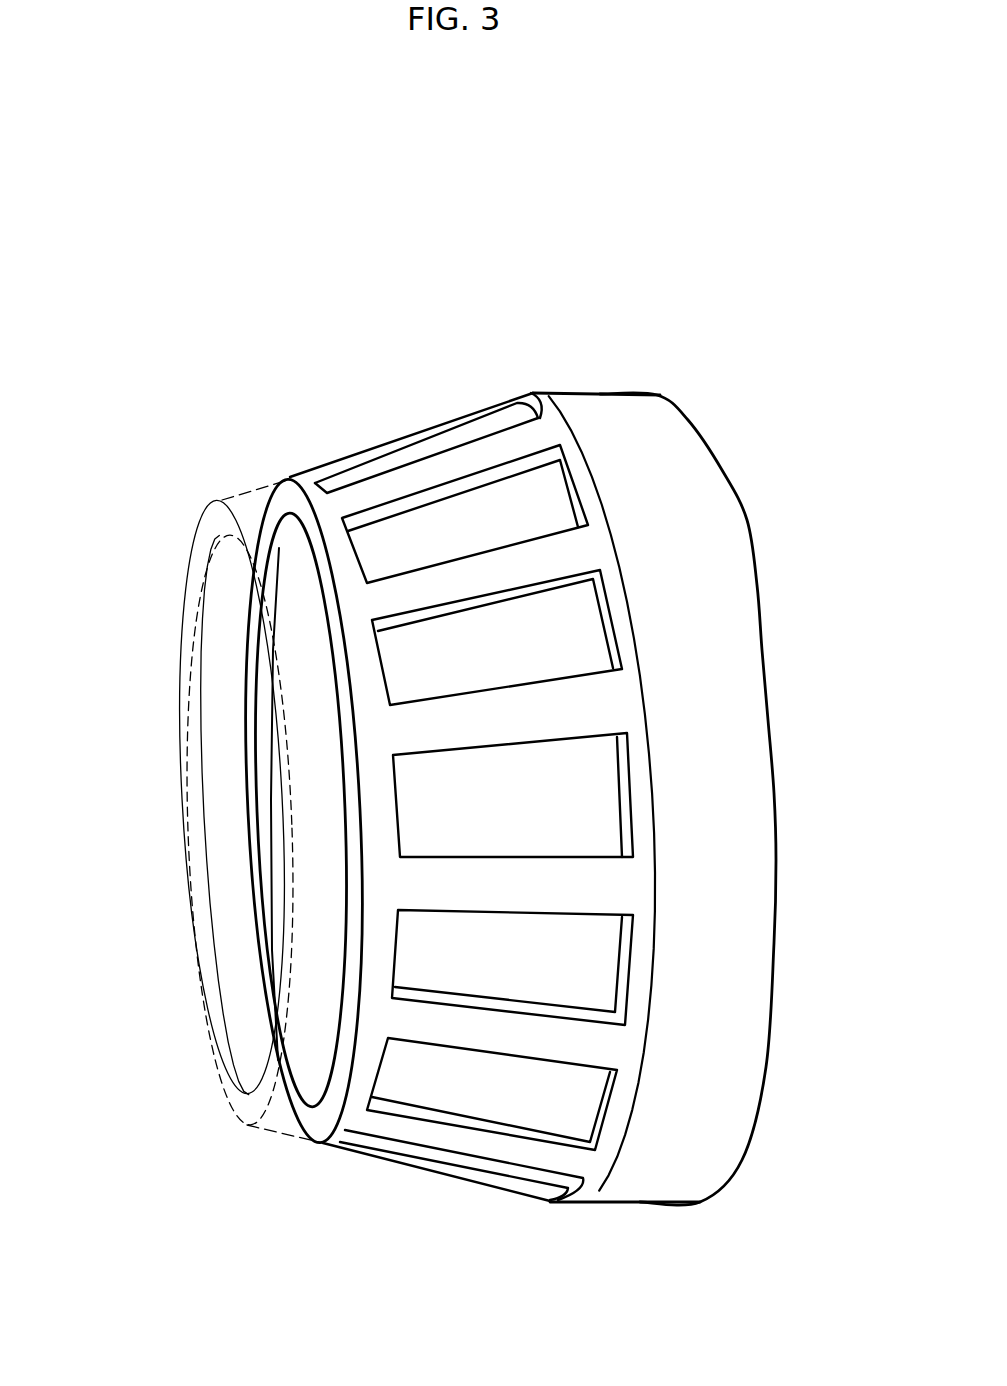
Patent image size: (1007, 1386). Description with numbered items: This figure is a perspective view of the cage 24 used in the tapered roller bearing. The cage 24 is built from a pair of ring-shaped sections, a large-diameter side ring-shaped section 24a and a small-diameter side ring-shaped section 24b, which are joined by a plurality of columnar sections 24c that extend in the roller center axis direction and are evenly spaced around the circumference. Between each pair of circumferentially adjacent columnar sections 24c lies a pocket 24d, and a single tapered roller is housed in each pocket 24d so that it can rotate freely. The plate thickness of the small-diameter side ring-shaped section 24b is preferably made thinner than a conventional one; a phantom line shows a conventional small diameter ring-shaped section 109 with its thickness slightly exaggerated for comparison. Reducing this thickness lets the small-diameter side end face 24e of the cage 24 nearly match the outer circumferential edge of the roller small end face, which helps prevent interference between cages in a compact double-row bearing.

The cage 24 is at (165, 487).
The large-diameter side ring-shaped section 24a is at (718, 575).
The small-diameter side ring-shaped section 24b is at (380, 735).
The columnar section 24c is at (460, 468).
The pocket 24d is at (502, 502).
The end face 24e is at (323, 1120).
The conventional small diameter ring-shaped section 109 is at (240, 1100).